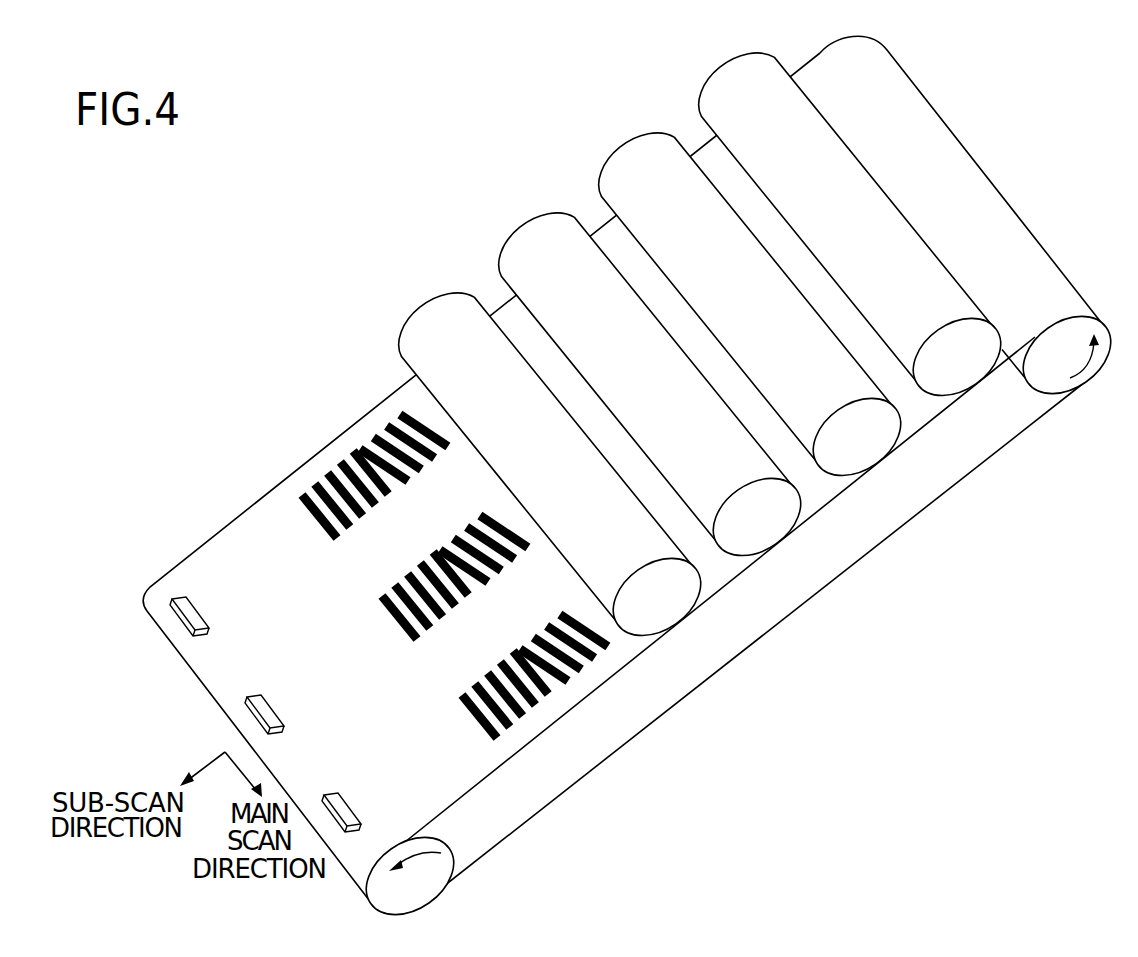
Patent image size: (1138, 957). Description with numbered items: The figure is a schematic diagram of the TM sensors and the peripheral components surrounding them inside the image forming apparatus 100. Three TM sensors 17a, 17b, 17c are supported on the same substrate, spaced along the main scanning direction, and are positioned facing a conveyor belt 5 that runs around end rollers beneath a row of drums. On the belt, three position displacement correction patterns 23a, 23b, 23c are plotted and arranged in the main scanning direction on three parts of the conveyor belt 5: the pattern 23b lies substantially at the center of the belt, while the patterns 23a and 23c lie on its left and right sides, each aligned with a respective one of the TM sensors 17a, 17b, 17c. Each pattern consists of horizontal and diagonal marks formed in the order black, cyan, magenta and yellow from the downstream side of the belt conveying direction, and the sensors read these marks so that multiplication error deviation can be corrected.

The conveyor belt 5 is at (626, 702).
The image forming apparatus 100 is at (373, 178).
The TM sensor 17a is at (363, 814).
The TM sensor 17b is at (286, 718).
The TM sensor 17c is at (211, 619).
The position displacement correction pattern 23a is at (492, 734).
The position displacement correction pattern 23b is at (412, 637).
The position displacement correction pattern 23c is at (330, 537).